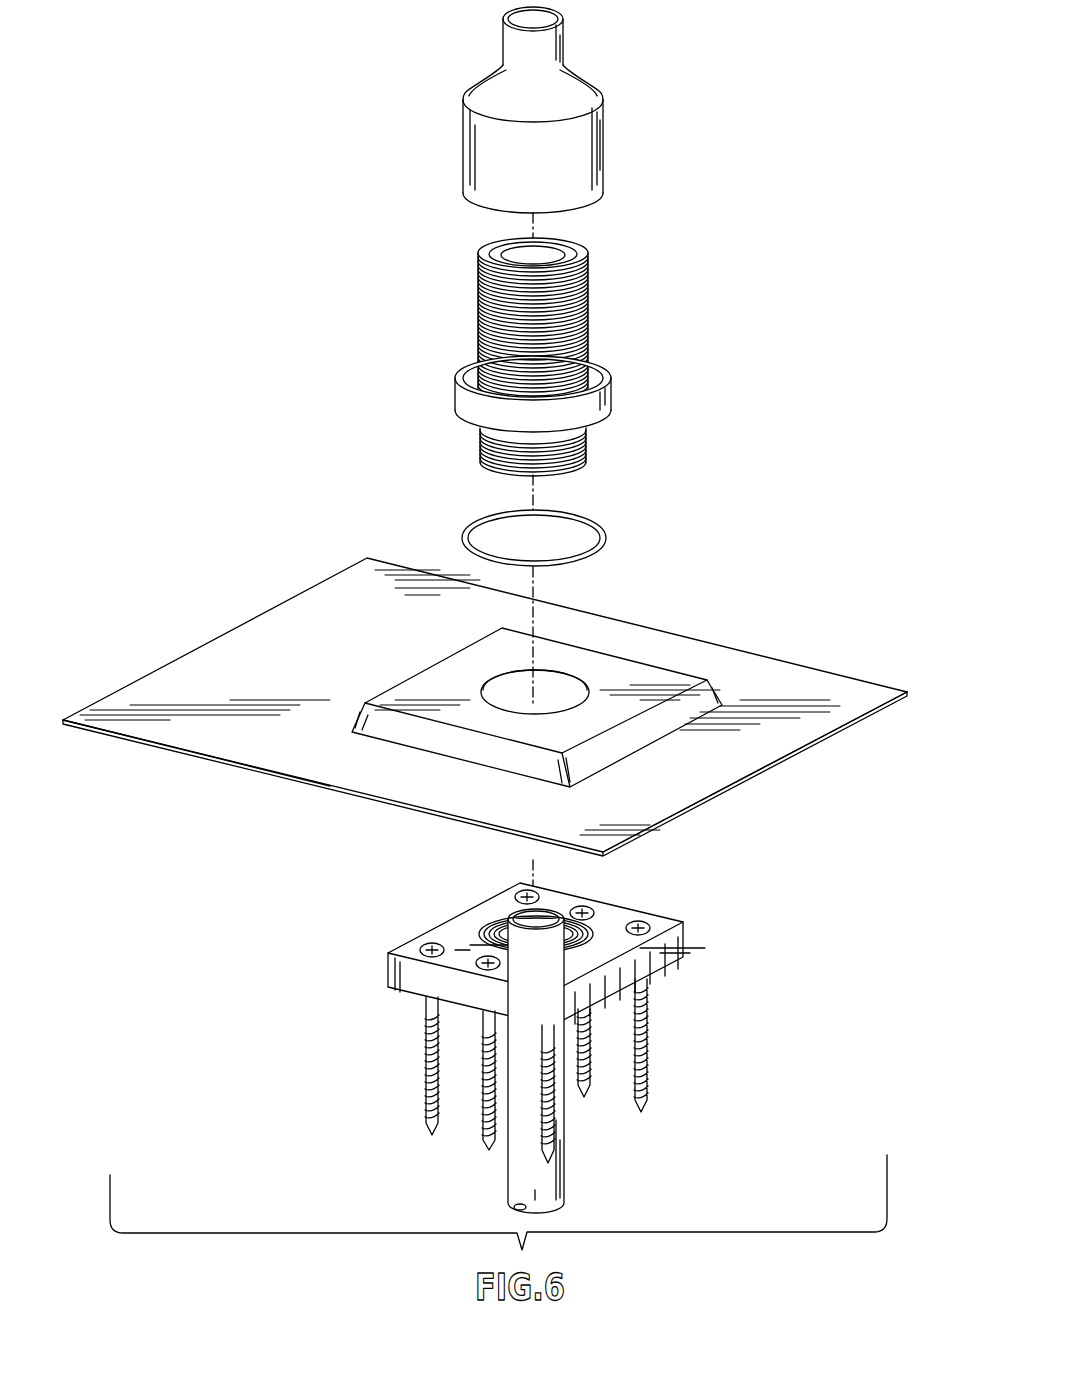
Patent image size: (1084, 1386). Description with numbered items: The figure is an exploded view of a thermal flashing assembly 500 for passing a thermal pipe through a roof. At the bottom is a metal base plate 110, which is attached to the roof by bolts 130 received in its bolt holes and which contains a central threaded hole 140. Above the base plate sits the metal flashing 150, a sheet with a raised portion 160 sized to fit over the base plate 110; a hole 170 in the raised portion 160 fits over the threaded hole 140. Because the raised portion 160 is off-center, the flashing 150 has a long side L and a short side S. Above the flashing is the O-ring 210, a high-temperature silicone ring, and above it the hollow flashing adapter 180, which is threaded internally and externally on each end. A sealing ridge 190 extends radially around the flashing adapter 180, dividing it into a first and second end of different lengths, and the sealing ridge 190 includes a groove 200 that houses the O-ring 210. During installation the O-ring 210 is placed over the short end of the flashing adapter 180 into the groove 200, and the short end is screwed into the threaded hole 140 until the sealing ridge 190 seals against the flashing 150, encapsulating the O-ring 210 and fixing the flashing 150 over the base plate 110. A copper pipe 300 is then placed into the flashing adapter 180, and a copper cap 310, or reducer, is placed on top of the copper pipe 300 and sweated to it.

The copper cap 310 is at (603, 135).
The flashing adapter 180 is at (582, 287).
The sealing ridge 190 is at (453, 390).
The groove 200 is at (523, 357).
The O-ring 210 is at (595, 523).
The thermal flashing assembly 500 is at (780, 508).
The flashing 150 is at (485, 707).
The raised portion 160 is at (515, 717).
The hole 170 is at (567, 680).
The long side L is at (207, 757).
The short side S is at (693, 805).
The base plate 110 is at (564, 1048).
The threaded hole 140 is at (493, 927).
The bolts 130 is at (648, 1033).
The copper pipe 300 is at (563, 1155).